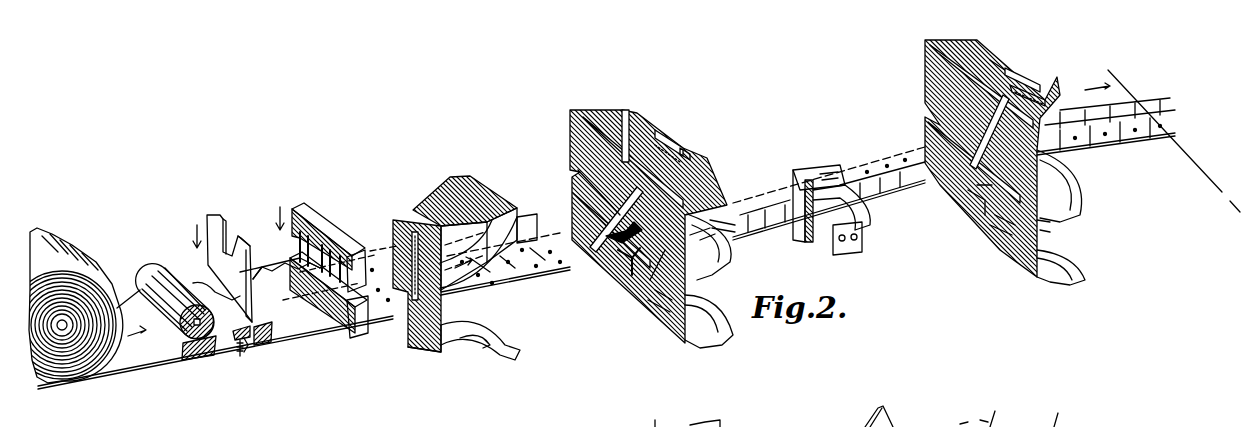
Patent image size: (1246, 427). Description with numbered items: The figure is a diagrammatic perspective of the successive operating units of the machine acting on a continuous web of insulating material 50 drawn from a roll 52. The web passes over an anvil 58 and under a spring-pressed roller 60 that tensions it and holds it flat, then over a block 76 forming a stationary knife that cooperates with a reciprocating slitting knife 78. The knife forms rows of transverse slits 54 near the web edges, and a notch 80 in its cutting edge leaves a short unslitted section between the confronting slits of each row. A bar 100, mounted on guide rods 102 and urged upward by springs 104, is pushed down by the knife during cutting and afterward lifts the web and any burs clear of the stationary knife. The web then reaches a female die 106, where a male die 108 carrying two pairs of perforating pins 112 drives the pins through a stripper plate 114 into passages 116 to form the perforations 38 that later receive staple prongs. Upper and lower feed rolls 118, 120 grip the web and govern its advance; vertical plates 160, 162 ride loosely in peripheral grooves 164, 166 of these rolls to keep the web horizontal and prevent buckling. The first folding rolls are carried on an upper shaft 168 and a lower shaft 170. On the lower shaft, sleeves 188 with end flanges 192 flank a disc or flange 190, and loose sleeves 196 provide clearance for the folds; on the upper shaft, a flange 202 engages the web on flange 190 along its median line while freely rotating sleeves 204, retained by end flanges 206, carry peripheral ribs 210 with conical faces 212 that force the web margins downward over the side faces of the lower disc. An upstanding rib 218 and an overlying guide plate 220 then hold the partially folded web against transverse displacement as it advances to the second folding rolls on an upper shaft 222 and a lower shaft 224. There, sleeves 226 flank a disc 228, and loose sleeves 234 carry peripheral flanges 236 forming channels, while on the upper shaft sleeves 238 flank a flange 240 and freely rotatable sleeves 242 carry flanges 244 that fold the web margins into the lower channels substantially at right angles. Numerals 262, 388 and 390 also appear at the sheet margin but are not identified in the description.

The perforations 38 is at (388, 306).
The web of insulating material 50 is at (151, 348).
The roll 52 is at (58, 250).
The transverse slits 54 is at (294, 312).
The anvil 58 is at (201, 347).
The roller 60 is at (156, 276).
The block forming a stationary knife 76 is at (265, 345).
The slitting knife 78 is at (212, 222).
The notch 80 is at (213, 283).
The bar 100 is at (236, 340).
The guide rods 102 is at (244, 352).
The springs 104 is at (240, 357).
The female die 106 is at (356, 334).
The male die 108 is at (328, 232).
The perforating pins 112 is at (313, 233).
The stripper plate 114 is at (350, 262).
The passages 116 is at (340, 317).
The upper feed roll 118 is at (490, 193).
The lower feed roll 120 is at (508, 347).
The vertical plate 160 is at (530, 222).
The vertical plate 162 is at (414, 337).
The peripheral groove 164 is at (414, 228).
The peripheral groove 166 is at (440, 323).
The upper shaft 168 is at (583, 113).
The lower shaft 170 is at (687, 337).
The sleeves 188 is at (657, 293).
The disc or flange 190 is at (620, 273).
The end flanges 192 is at (697, 290).
The sleeves 196 is at (577, 170).
The disc or flange 202 is at (690, 155).
The sleeves 204 is at (705, 193).
The end flanges 206 is at (720, 213).
The peripheral ribs 210 is at (626, 113).
The conical faces 212 is at (677, 140).
The upstanding rib 218 is at (812, 234).
The guide plate 220 is at (818, 171).
The upper shaft 222 is at (1043, 163).
The lower shaft 224 is at (1047, 267).
The sleeves 226 is at (1000, 223).
The disc or flange 228 is at (977, 207).
The sleeves 234 is at (1037, 220).
The peripheral flanges 236 is at (927, 140).
The sleeves 238 is at (997, 65).
The flange or disc 240 is at (1050, 98).
The sleeves 242 is at (1010, 70).
The peripheral flanges 244 is at (1017, 87).
The element of another figure 262 is at (679, 417).
The element of another figure 388 is at (983, 410).
The element of another figure 390 is at (1051, 411).